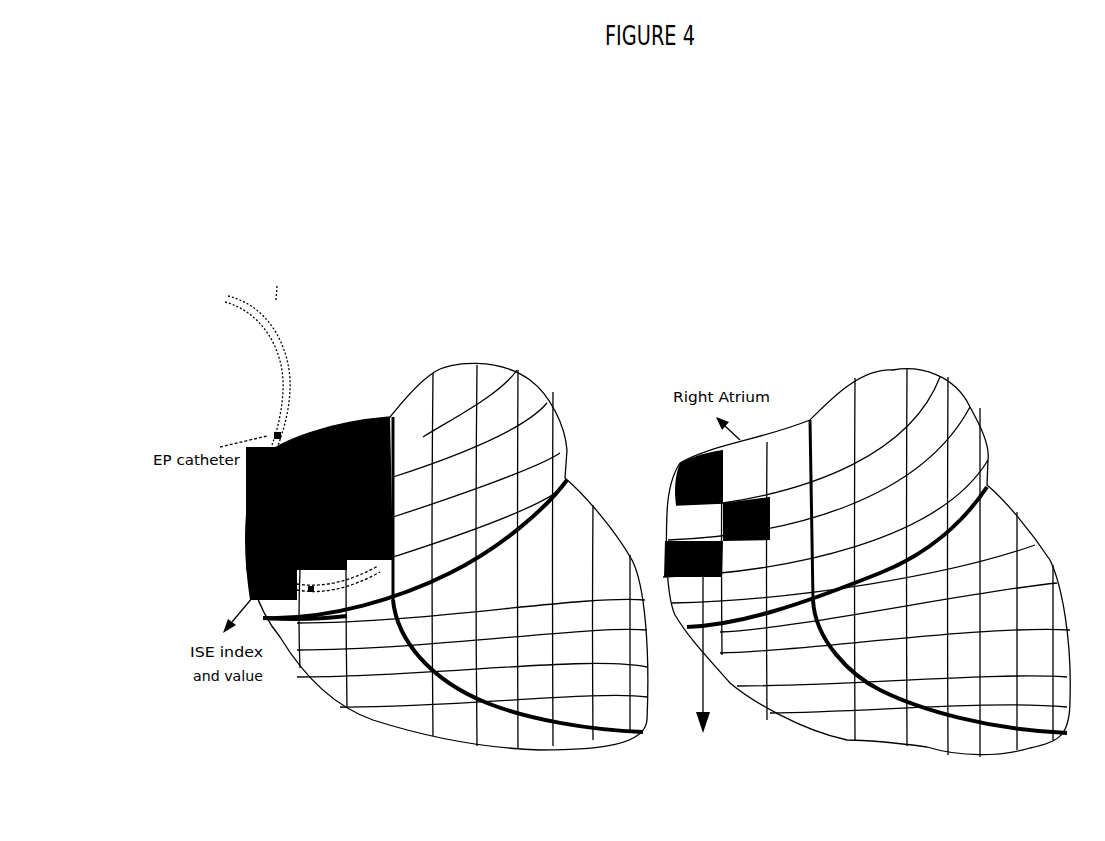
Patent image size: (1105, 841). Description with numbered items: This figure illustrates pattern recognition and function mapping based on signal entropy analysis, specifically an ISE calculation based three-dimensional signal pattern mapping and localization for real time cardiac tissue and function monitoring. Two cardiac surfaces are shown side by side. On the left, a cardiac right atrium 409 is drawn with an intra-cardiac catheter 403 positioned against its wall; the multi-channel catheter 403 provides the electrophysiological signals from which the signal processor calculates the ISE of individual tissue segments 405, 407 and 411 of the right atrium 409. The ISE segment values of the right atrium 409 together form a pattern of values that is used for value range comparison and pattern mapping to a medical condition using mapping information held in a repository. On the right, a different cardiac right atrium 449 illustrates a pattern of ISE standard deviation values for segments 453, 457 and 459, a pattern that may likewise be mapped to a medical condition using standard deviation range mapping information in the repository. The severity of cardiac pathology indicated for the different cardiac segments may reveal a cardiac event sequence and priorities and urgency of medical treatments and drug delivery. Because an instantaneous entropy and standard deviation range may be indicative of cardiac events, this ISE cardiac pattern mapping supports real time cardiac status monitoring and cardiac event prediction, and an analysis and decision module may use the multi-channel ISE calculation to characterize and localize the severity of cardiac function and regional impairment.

The intra-cardiac catheter 403 is at (277, 424).
The segment 405 is at (253, 476).
The segment 407 is at (253, 520).
The segment 411 is at (253, 557).
The cardiac right atrium 409 is at (314, 603).
The cardiac right atrium 449 is at (755, 607).
The segment 453 is at (670, 560).
The segment 457 is at (676, 478).
The segment 459 is at (770, 537).